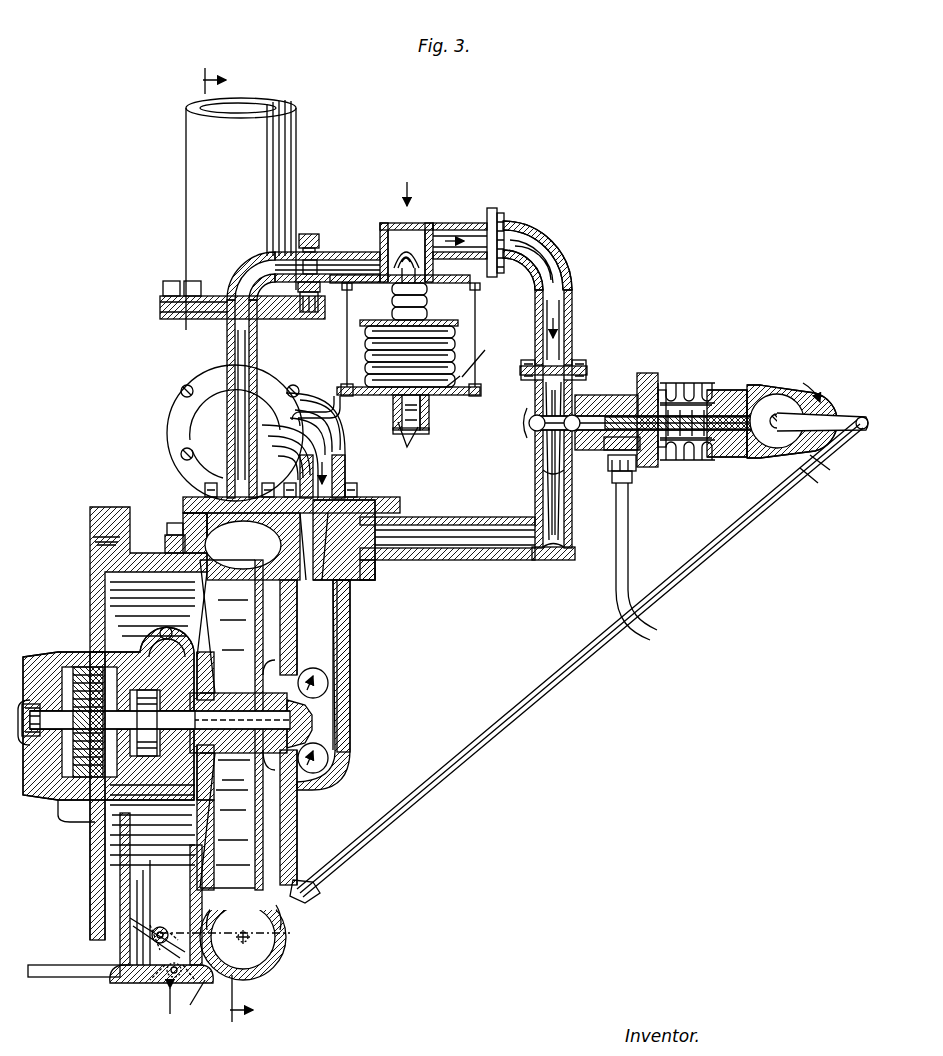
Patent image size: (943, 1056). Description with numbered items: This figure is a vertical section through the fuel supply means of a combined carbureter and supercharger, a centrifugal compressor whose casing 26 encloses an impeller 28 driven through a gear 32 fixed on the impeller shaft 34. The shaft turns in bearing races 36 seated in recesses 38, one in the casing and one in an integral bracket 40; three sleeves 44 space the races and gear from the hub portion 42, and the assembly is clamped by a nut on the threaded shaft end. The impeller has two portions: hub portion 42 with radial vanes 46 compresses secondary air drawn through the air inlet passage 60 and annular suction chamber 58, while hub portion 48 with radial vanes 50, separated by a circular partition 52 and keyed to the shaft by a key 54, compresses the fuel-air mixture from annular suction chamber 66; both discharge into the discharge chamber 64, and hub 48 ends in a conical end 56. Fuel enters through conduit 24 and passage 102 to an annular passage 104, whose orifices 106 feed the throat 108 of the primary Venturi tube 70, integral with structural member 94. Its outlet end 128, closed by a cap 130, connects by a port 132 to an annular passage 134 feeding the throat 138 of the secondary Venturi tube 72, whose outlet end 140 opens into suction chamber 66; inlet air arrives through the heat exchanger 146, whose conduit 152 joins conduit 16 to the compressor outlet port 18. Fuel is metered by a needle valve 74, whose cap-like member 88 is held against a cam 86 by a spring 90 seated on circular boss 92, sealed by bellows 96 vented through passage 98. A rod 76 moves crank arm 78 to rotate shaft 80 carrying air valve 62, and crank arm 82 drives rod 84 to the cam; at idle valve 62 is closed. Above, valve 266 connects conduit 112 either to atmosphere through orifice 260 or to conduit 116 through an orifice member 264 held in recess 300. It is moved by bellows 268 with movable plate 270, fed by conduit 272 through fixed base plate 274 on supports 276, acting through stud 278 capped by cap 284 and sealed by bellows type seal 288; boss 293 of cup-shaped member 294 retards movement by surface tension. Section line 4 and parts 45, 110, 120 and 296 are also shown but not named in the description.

The section line 4- 4 is at (236, 545).
The conduit 16 is at (286, 155).
The compressor outlet port 18 is at (168, 535).
The conduit 24 is at (621, 568).
The casing 26 is at (296, 857).
The impeller 28 is at (270, 819).
The gear 32 is at (80, 782).
The impeller shaft 34 is at (93, 808).
The bearing races 36 is at (158, 640).
The recesses 38 is at (73, 665).
The bracket 40 is at (30, 692).
The hub portion 42 is at (200, 754).
The sleeves 44 is at (128, 711).
The shaft nut 45 is at (23, 700).
The radial vanes 46 is at (229, 783).
The hub portion 48 is at (275, 813).
The radial vanes 50 is at (270, 843).
The circular partition 52 is at (262, 639).
The key 54 is at (228, 700).
The conical end 56 is at (303, 722).
The annular suction chamber 58 is at (160, 631).
The air inlet passage 60 is at (135, 870).
The valve 62 is at (148, 926).
The discharge chamber 64 is at (248, 544).
The annular suction chamber 66 is at (327, 690).
The Venturi tube 70 is at (553, 496).
The Venturi tube 72 is at (343, 603).
The needle valve 74 is at (692, 400).
The rod 76 is at (60, 975).
The crank arm 78 is at (150, 988).
The shaft 80 is at (158, 929).
The crank arm 82 is at (210, 990).
The rod 84 is at (403, 803).
The cam 86 is at (770, 397).
The cap-like member 88 is at (758, 397).
The spring 90 is at (695, 392).
The circular boss 92 is at (660, 450).
The structural member 94 is at (645, 372).
The bellows 96 is at (700, 460).
The passage 98 is at (682, 380).
The passage 102 is at (632, 386).
The annular passage 104 is at (589, 392).
The orifices 106 is at (538, 414).
The throat 108 is at (562, 366).
The flange 110 is at (546, 382).
The conduit 112 is at (568, 328).
The conduit 116 is at (222, 336).
The elbow flange 120 is at (235, 440).
The outlet end 128 is at (558, 500).
The cap 130 is at (553, 562).
The port 132 is at (412, 530).
The annular passage 134 is at (382, 516).
The throat 138 is at (358, 587).
The outlet end 140 is at (352, 636).
The heat exchanger 146 is at (183, 364).
The conduit 152 is at (186, 331).
The orifice 260 is at (418, 222).
The orifice member 264 is at (362, 241).
The valve 266 is at (402, 222).
The bellows 268 is at (352, 335).
The movable plate 270 is at (410, 323).
The conduit 272 is at (336, 380).
The fixed base plate 274 is at (482, 362).
The supports 276 is at (348, 332).
The stud 278 is at (412, 300).
The cap 284 is at (480, 226).
The bellows type seal 288 is at (396, 299).
The boss 293 is at (418, 445).
The cup-shaped member 294 is at (430, 418).
The fitting 296 is at (428, 404).
The recess 300 is at (314, 243).